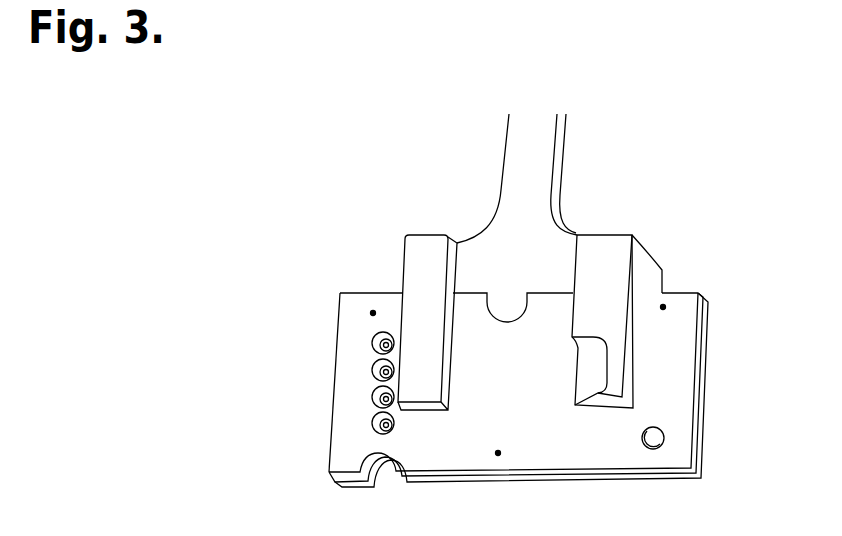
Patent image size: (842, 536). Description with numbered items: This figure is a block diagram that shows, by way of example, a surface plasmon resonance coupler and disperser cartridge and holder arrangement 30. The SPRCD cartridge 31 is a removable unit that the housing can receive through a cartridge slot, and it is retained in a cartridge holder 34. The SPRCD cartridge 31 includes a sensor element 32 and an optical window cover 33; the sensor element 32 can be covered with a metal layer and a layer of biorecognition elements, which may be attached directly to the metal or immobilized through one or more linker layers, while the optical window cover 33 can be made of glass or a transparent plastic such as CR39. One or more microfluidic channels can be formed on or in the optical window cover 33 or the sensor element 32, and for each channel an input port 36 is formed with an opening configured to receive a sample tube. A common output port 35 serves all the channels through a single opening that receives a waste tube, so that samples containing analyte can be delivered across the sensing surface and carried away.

The connector assembly 30 is at (162, 100).
The SPRCD cartridge 31 is at (235, 293).
The sensor element 32 is at (700, 345).
The optical window cover 33 is at (707, 373).
The cartridge holder 34 is at (563, 163).
The common output port 35 is at (664, 435).
The input port 36 is at (357, 428).